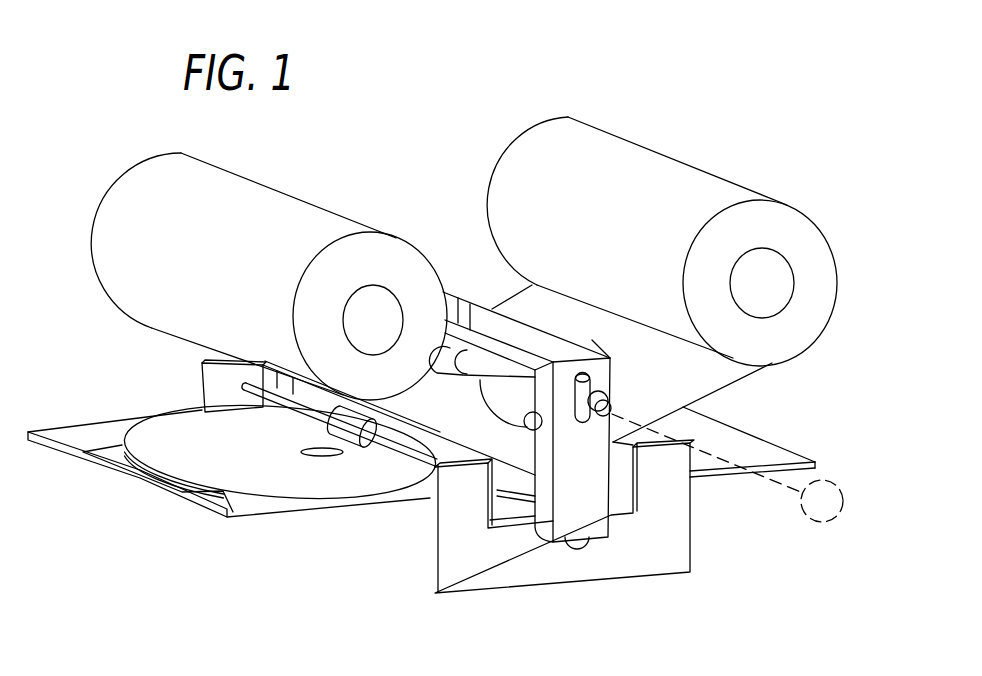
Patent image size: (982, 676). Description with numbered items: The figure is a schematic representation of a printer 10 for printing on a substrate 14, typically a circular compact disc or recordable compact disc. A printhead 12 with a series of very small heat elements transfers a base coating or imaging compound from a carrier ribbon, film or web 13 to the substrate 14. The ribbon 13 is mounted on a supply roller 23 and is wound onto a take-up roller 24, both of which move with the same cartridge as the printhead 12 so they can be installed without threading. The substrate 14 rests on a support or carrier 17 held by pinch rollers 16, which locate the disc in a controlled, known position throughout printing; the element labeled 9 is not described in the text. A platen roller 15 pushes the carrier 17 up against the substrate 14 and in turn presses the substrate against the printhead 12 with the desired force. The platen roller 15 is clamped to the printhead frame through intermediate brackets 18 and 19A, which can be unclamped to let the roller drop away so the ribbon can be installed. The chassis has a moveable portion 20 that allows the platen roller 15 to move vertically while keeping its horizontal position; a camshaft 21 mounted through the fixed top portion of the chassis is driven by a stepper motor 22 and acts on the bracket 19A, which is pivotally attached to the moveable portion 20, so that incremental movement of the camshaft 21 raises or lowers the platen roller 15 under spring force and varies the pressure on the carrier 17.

The guide plate 9 is at (123, 446).
The printer 10 is at (413, 137).
The printhead 12 is at (505, 440).
The ribbon 13 is at (703, 387).
The substrate 14 is at (168, 430).
The platen roller 15 is at (519, 502).
The pinch rollers 16 is at (362, 446).
The carrier 17 is at (233, 514).
The brackets 18 is at (594, 529).
The bracket 19A is at (592, 538).
The moveable portion of the chassis 20 is at (487, 578).
The camshaft 21 is at (466, 343).
The stepper motor 22 is at (812, 512).
The supply roller 23 is at (373, 262).
The take-up roller 24 is at (793, 226).